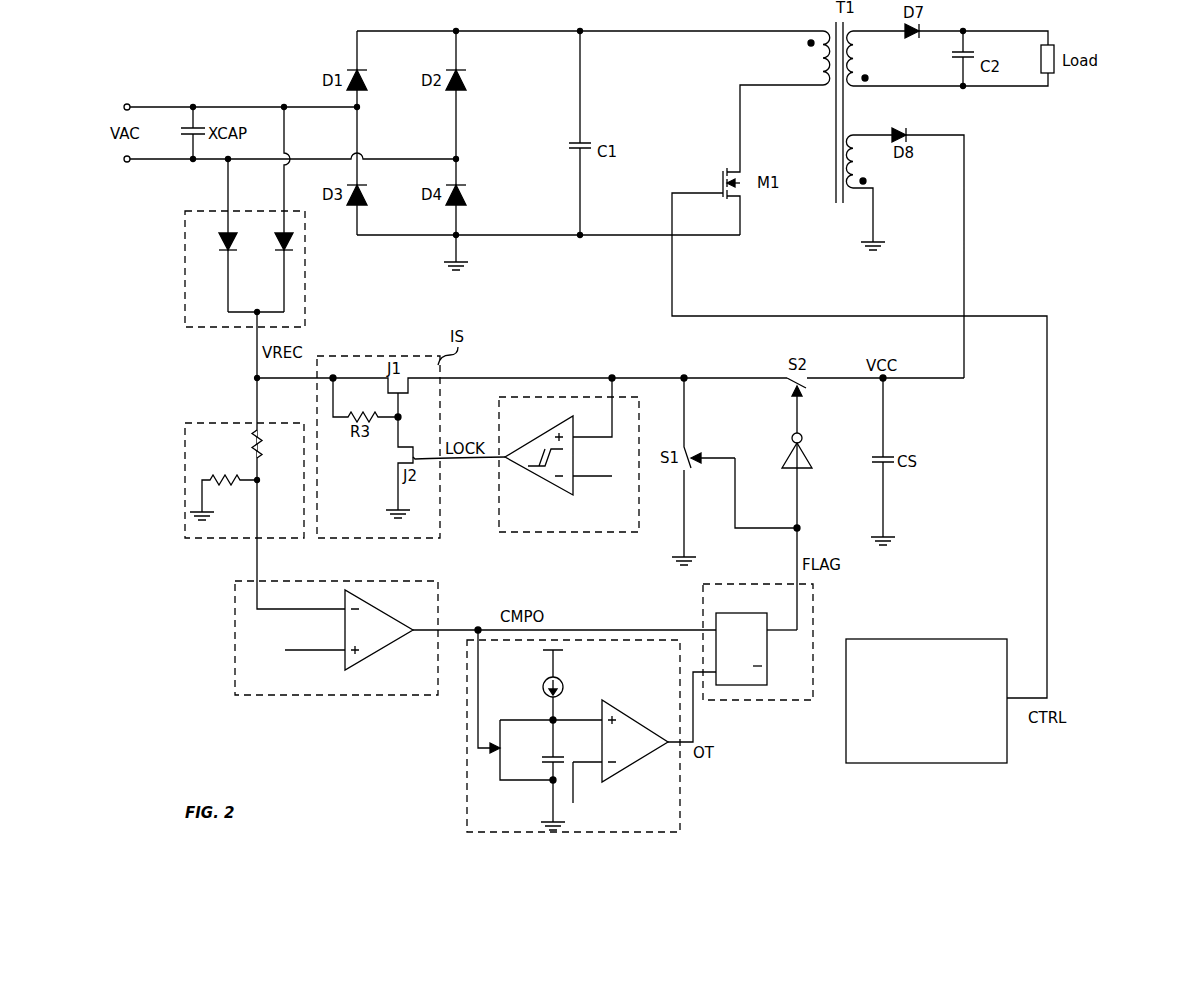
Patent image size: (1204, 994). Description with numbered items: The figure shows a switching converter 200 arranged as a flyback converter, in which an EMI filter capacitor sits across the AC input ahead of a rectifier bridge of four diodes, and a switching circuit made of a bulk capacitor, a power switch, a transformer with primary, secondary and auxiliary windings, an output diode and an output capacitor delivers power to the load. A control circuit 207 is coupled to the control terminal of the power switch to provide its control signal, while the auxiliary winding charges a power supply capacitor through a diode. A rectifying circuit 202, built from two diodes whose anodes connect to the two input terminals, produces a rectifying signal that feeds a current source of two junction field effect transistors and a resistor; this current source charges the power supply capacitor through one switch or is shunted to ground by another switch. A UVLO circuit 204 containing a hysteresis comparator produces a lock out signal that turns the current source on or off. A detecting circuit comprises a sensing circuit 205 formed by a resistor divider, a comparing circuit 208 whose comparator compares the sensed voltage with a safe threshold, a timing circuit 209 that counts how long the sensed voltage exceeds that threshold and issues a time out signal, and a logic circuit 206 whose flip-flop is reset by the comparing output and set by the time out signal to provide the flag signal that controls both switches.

The switching converter 200 is at (1192, 35).
The rectifying circuit 202 is at (211, 327).
The UVLO circuit 204 is at (516, 532).
The sensing circuit 205 is at (210, 538).
The logic circuit 206 is at (746, 700).
The control circuit 207 is at (861, 763).
The comparing circuit 208 is at (281, 695).
The timing circuit 209 is at (467, 795).